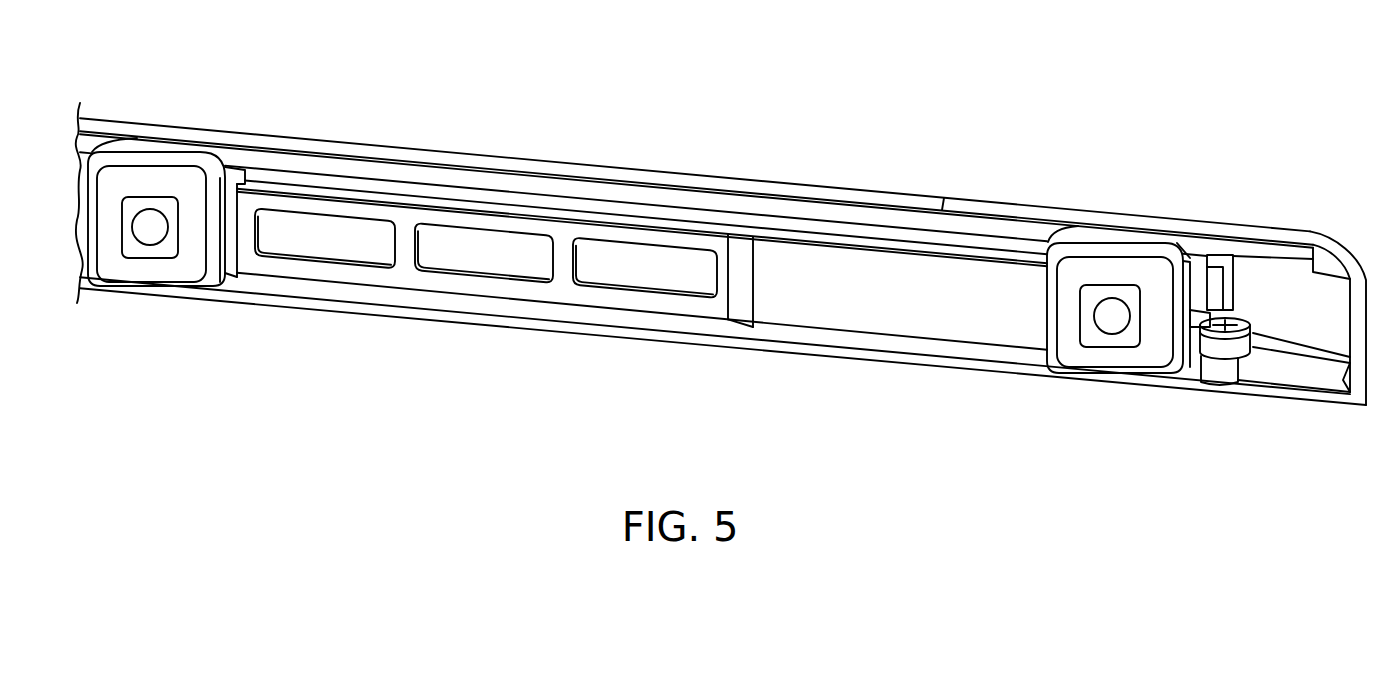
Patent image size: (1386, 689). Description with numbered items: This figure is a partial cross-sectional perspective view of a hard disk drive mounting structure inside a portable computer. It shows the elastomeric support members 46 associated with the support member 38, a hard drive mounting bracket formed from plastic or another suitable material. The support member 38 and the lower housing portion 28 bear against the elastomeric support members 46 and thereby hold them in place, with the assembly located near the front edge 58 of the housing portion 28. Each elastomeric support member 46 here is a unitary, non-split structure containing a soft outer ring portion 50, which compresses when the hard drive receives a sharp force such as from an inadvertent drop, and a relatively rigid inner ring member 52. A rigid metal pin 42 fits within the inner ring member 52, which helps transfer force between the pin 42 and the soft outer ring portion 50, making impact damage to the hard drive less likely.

The housing portion 28 is at (988, 208).
The support member 38 is at (355, 207).
The pin 42 is at (148, 217).
The elastomeric support member 46 is at (155, 224).
The outer ring portion 50 is at (142, 182).
The inner ring member 52 is at (142, 247).
The front edge 58 is at (1221, 320).